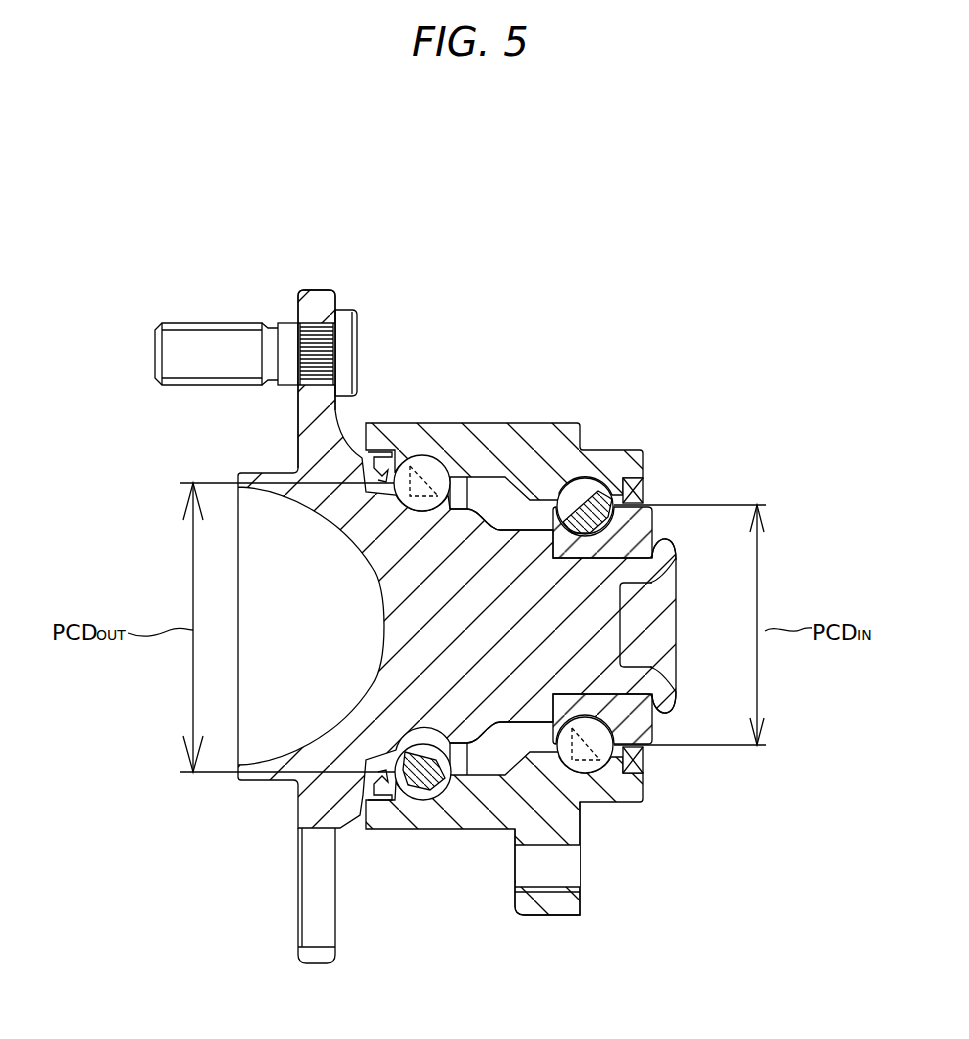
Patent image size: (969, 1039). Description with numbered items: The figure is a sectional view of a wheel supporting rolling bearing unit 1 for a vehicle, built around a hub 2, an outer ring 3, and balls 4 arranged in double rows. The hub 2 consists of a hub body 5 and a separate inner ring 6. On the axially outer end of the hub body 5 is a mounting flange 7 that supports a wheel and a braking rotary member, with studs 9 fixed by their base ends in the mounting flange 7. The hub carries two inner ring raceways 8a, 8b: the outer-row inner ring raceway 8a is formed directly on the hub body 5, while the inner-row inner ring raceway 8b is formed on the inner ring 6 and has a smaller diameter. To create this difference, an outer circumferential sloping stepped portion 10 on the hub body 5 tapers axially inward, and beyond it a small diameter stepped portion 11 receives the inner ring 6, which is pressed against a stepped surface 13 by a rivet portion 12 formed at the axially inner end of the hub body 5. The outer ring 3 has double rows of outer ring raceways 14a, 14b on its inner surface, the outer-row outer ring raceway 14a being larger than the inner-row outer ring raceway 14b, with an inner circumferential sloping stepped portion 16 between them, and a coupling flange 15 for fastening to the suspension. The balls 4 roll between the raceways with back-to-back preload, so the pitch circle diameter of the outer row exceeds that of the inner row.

The wheel supporting rolling bearing unit 1 is at (273, 795).
The hub 2 is at (346, 507).
The outer ring 3 is at (565, 423).
The balls 4 is at (415, 463).
The hub body 5 is at (316, 461).
The inner ring 6 is at (628, 528).
The mounting flange 7 is at (319, 303).
The inner ring raceway 8a is at (411, 768).
The inner ring raceway 8b is at (588, 757).
The stud 9 is at (215, 346).
The outer circumferential sloping stepped portion 10 is at (482, 734).
The small diameter stepped portion 11 is at (620, 557).
The rivet portion 12 is at (666, 703).
The stepped surface 13 is at (616, 730).
The outer ring raceway 14a is at (424, 470).
The outer ring raceway 14b is at (591, 488).
The coupling flange 15 is at (550, 905).
The inner circumferential sloping stepped portion 16 is at (518, 840).